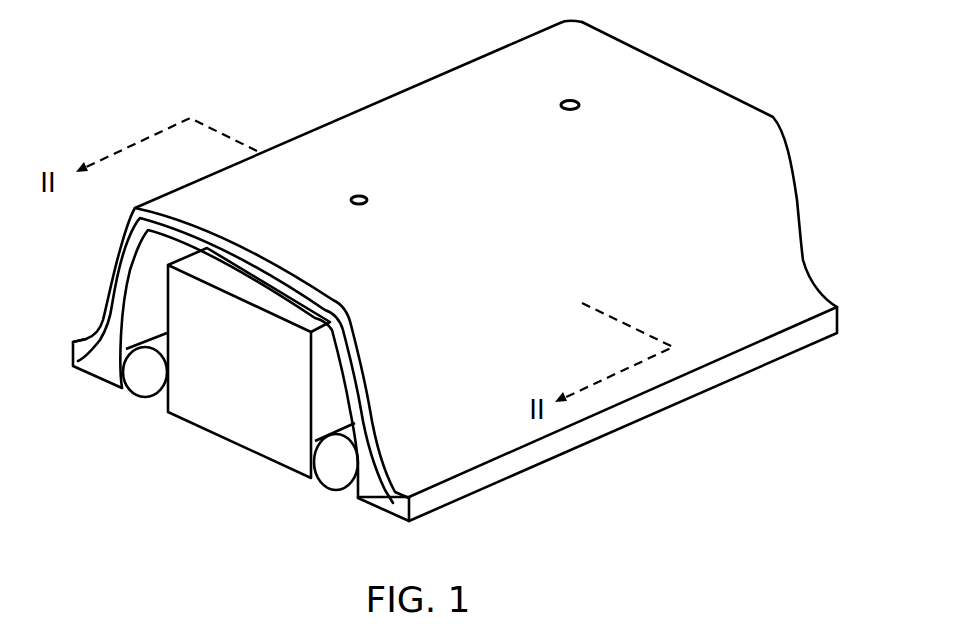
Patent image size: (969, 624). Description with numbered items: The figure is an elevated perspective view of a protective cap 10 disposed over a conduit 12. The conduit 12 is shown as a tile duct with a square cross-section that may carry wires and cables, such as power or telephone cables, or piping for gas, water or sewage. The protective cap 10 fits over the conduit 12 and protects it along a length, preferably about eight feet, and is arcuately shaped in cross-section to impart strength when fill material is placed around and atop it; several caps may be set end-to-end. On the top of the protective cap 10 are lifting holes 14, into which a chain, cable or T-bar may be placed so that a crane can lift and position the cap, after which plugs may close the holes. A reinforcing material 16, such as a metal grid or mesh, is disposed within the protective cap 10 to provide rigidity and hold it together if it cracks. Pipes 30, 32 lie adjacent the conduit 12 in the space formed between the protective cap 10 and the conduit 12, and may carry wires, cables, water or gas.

The protective cap 10 is at (360, 127).
The conduit 12 is at (240, 415).
The lifting holes 14 is at (560, 104).
The reinforcing material 16 is at (90, 364).
The pipe 30 is at (333, 457).
The pipe 32 is at (131, 379).